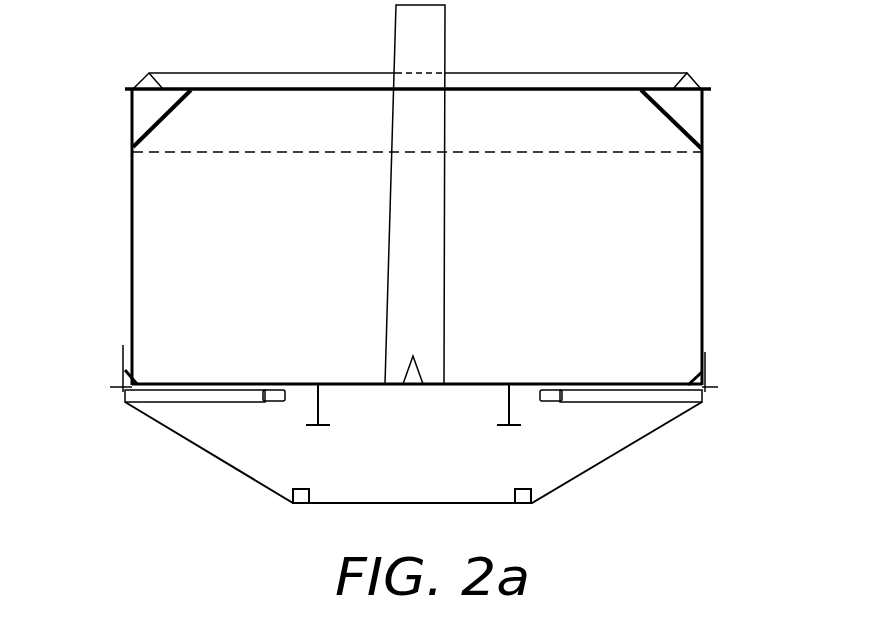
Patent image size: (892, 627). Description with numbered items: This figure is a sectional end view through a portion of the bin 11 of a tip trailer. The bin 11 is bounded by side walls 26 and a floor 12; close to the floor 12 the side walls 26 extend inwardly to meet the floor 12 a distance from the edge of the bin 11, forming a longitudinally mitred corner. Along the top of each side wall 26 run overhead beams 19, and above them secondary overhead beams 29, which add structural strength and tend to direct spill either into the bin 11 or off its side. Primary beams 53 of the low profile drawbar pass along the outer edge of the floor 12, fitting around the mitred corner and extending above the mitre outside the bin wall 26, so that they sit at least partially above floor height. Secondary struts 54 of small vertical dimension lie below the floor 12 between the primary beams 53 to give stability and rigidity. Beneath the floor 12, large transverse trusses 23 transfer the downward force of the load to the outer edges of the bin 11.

The bin 11 is at (418, 236).
The floor 12 is at (468, 384).
The overhead beams 19 is at (148, 113).
The transverse trusses 23 is at (158, 428).
The side walls 26 is at (130, 255).
The secondary overhead beams 29 is at (140, 78).
The primary beams 53 is at (122, 357).
The secondary struts 54 is at (270, 403).